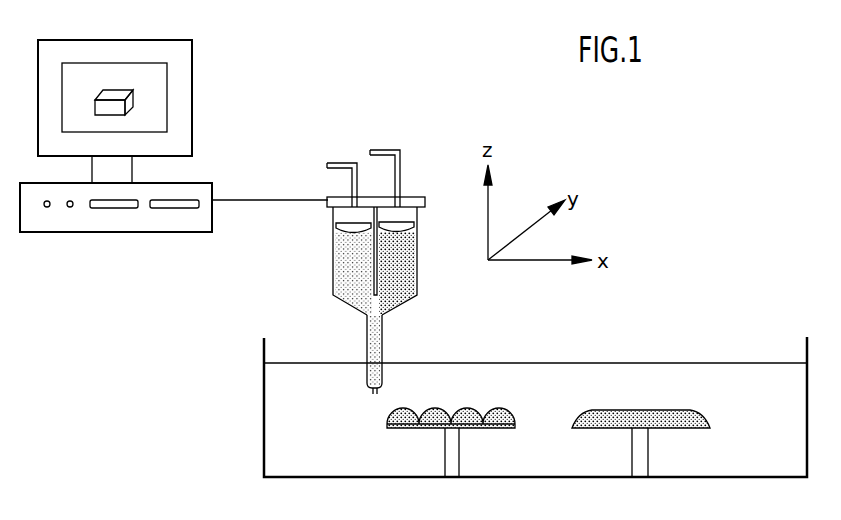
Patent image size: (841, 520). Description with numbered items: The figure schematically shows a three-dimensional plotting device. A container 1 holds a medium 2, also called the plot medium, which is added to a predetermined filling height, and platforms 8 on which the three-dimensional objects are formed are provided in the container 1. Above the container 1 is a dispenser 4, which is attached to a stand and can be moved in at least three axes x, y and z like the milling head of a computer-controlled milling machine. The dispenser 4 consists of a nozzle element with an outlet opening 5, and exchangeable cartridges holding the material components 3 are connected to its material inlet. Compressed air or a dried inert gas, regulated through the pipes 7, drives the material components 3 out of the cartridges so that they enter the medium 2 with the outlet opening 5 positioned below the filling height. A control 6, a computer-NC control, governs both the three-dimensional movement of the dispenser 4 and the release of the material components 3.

The container 1 is at (263, 392).
The medium 2 is at (285, 439).
The material component 3 is at (345, 297).
The dispenser 4 is at (333, 262).
The outlet opening 5 is at (370, 389).
The control 6 is at (192, 82).
The pipes 7 is at (334, 162).
The platform 8 is at (483, 428).